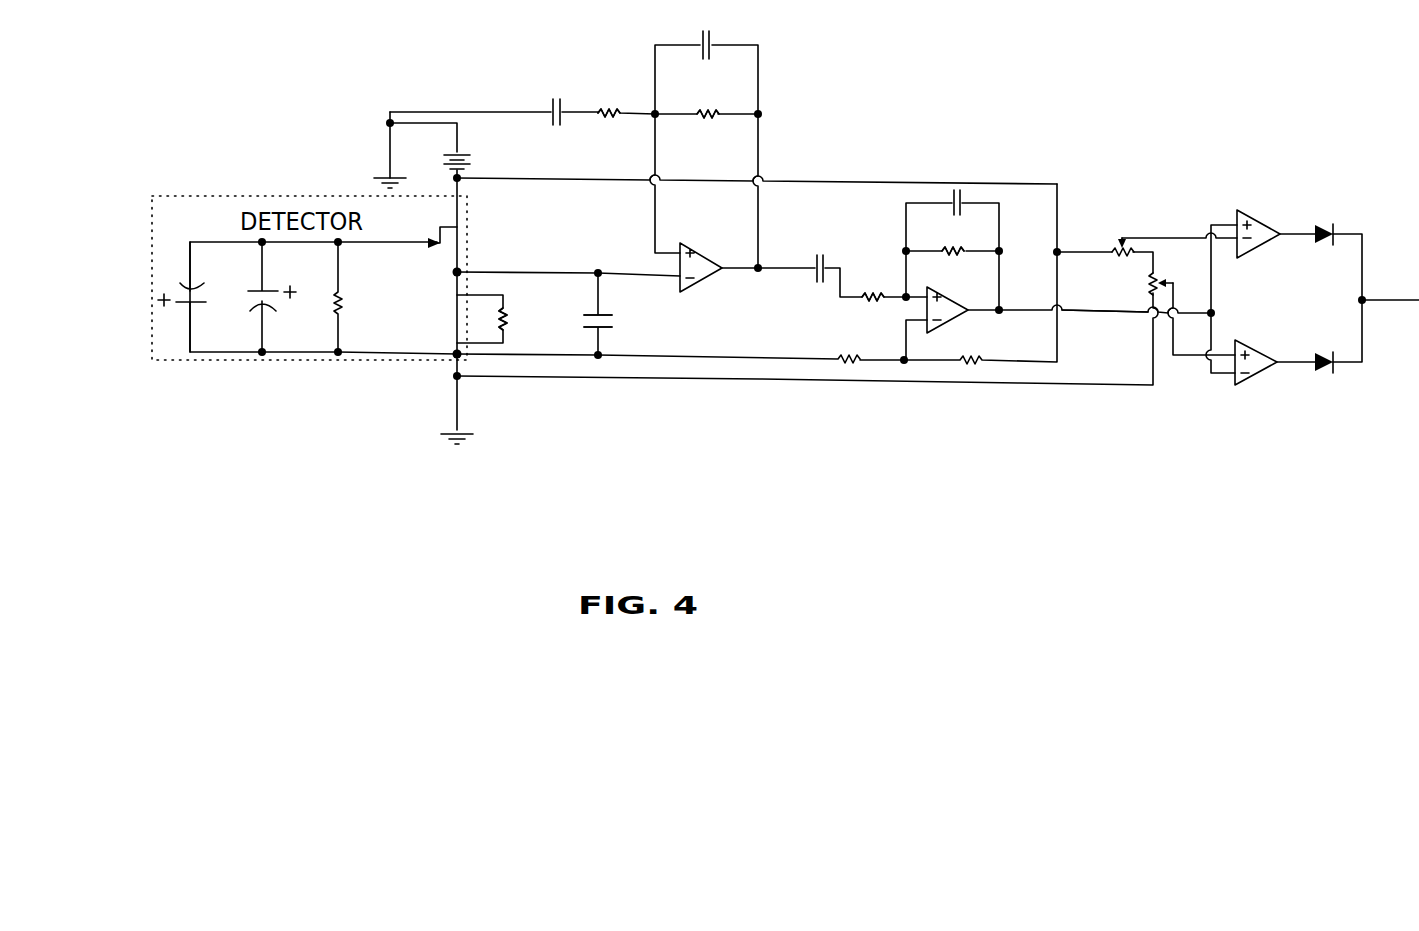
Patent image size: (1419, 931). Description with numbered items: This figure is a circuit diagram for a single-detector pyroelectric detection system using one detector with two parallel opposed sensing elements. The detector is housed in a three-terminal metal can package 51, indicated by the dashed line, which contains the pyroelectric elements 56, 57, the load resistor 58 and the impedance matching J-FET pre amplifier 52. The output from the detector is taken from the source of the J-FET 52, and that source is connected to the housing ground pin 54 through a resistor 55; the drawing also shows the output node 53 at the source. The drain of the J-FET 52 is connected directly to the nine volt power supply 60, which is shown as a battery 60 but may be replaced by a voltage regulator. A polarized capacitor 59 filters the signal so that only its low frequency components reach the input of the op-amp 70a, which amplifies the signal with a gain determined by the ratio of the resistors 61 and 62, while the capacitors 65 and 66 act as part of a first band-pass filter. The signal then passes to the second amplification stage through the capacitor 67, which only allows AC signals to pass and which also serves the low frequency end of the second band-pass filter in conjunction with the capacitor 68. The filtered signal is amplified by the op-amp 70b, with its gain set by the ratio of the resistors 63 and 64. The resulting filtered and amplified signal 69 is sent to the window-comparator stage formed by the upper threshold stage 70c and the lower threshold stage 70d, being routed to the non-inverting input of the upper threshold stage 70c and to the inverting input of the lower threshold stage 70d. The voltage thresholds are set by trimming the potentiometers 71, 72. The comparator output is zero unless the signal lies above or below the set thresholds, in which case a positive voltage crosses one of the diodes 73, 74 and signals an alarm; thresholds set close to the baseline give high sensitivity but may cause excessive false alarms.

The TO-5 metal can package 51 is at (150, 267).
The J-FET pre amplifier 52 is at (432, 232).
The detector output node 53 is at (442, 271).
The TO-5 housing ground pin 54 is at (442, 343).
The resistor 55 is at (523, 321).
The pyroelectric element 56 is at (199, 297).
The pyroelectric element 57 is at (280, 297).
The load resistor 58 is at (357, 297).
The polarized capacitor 59 is at (622, 322).
The power supply 60 is at (477, 159).
The resistor 61 is at (615, 126).
The resistor 62 is at (708, 132).
The resistor 63 is at (878, 311).
The resistor 64 is at (958, 265).
The capacitor 65 is at (554, 130).
The capacitor 66 is at (708, 61).
The capacitor 67 is at (823, 254).
The capacitor 68 is at (974, 214).
The filtered and amplified signal 69 is at (1105, 303).
The op-amp 70a is at (716, 274).
The op-amp 70b is at (966, 317).
The upper threshold stage 70c is at (1270, 225).
The lower threshold stage 70d is at (1270, 354).
The potentiometer 71 is at (1124, 261).
The potentiometer 72 is at (1178, 286).
The diode 73 is at (1344, 221).
The diode 74 is at (1345, 377).